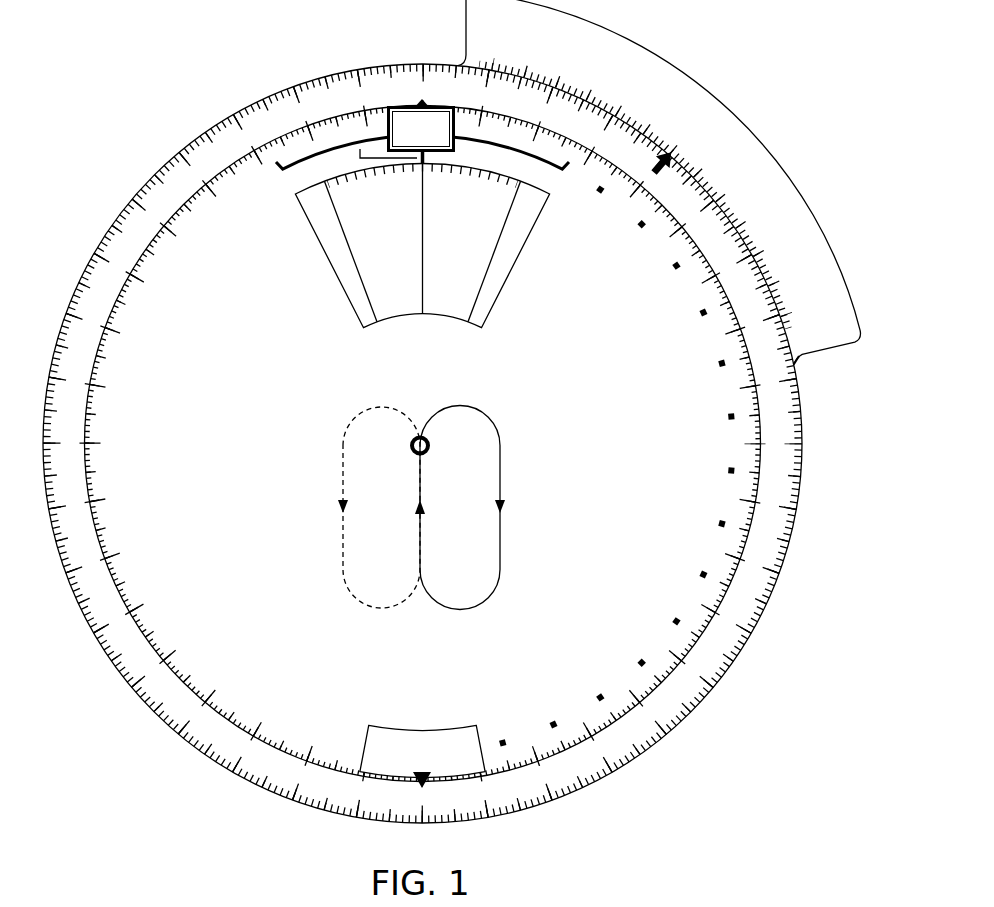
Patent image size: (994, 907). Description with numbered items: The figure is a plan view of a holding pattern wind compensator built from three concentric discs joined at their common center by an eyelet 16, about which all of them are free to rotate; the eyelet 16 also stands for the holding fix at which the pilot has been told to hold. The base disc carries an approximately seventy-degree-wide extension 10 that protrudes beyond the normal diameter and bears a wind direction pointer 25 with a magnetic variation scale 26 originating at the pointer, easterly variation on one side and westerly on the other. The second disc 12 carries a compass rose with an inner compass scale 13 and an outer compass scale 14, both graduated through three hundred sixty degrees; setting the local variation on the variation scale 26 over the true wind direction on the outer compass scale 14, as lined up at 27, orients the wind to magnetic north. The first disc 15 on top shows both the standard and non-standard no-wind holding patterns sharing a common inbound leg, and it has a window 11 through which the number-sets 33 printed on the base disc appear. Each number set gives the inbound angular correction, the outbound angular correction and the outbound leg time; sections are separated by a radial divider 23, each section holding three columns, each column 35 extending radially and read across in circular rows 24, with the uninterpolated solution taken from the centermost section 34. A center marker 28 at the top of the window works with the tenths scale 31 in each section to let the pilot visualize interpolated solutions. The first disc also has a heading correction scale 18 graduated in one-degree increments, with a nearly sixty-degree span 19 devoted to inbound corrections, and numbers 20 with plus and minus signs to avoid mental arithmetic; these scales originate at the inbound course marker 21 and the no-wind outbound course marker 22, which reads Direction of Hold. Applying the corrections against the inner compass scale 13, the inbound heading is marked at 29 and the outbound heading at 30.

The extension 10 is at (747, 127).
The window 11 is at (428, 200).
The second disc 12 is at (183, 143).
The inner compass scale 13 is at (145, 230).
The outer compass scale 14 is at (95, 242).
The first disc 15 is at (353, 508).
The eyelet 16 is at (408, 447).
The heading correction scale 18 is at (133, 292).
The IB correction scale 19 is at (322, 205).
The numbers 20 is at (130, 387).
The IB course marker 21 is at (412, 112).
The no-wind OB course marker 22 is at (437, 727).
The divider 23 is at (480, 313).
The rows 24 is at (483, 268).
The wind direction pointer 25 is at (693, 147).
The magnetic variation scale 26 is at (713, 180).
The lining up position 27 is at (615, 110).
The center marker 28 is at (360, 150).
The IB heading mark 29 is at (517, 110).
The OB heading mark 30 is at (743, 322).
The tenths scale 31 is at (528, 197).
The number-sets 33 is at (367, 245).
The centermost section 34 is at (405, 280).
The column 35 is at (283, 160).